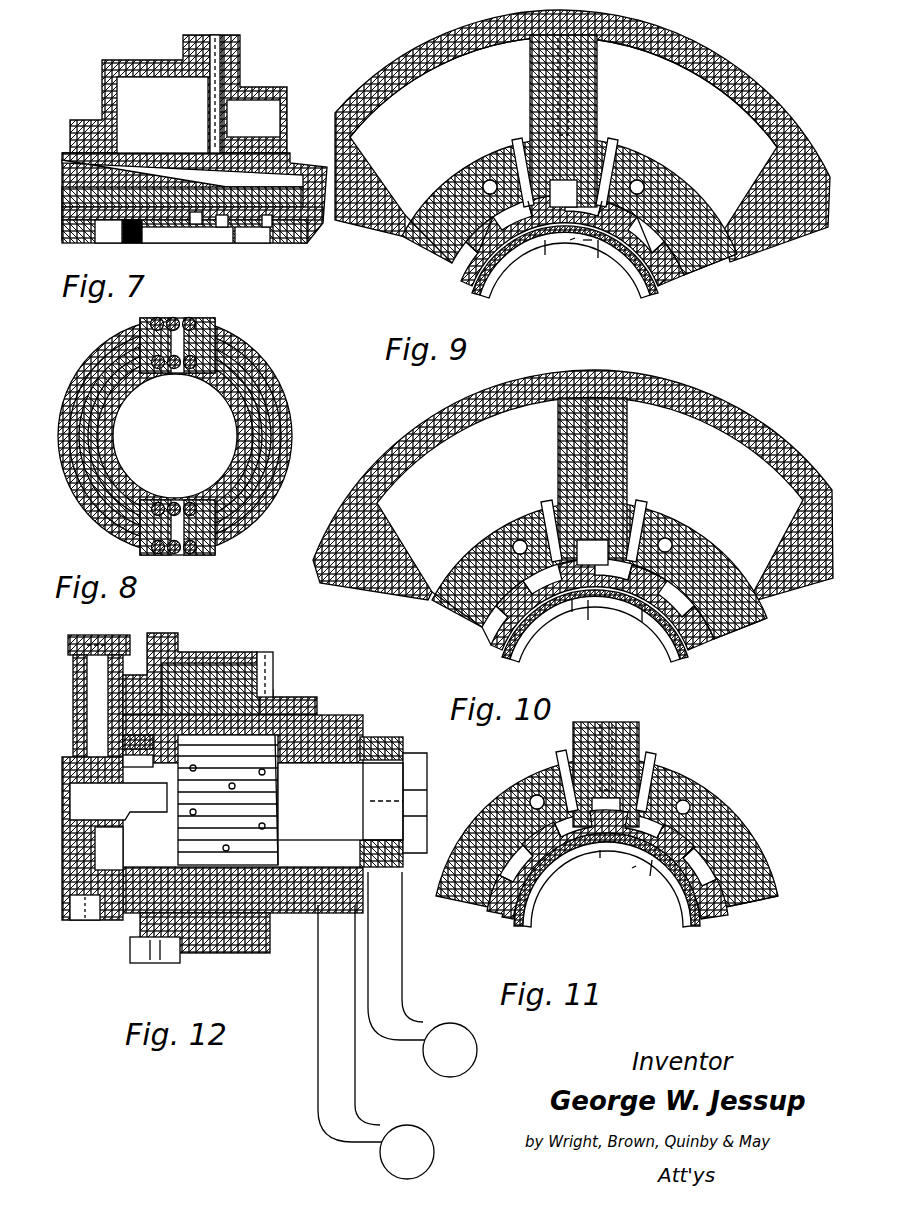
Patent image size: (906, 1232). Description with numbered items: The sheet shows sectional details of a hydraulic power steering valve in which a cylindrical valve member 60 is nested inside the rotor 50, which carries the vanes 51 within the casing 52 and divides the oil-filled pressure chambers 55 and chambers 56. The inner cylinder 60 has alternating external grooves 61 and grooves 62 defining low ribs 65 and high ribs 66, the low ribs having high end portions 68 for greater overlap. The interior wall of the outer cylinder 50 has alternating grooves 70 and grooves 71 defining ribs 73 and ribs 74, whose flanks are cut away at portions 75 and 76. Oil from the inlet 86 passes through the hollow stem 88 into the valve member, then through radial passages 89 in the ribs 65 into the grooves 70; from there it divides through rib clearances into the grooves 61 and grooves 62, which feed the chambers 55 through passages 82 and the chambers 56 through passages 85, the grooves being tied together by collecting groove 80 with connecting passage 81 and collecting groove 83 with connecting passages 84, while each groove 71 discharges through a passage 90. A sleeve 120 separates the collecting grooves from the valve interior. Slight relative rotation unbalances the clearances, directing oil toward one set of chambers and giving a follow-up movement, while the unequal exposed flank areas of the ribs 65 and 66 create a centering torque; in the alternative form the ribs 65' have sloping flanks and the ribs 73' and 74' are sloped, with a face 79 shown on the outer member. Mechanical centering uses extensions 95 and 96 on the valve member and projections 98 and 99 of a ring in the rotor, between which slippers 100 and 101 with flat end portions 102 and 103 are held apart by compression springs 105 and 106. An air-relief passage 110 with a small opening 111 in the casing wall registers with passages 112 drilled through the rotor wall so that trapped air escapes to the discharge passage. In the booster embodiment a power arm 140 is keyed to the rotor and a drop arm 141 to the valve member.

In FIG. 7, the rotor 50 is at (322, 172).
In FIG. 9, the rotor 50 is at (720, 276).
In FIG. 10, the rotor 50 is at (740, 630).
In FIG. 11, the rotor 50 is at (750, 880).
In FIG. 12, the rotor 50 is at (350, 735).
In FIG. 9, the vane 51 is at (598, 70).
In FIG. 10, the vane 51 is at (558, 426).
In FIG. 11, the vane 51 is at (575, 740).
In FIG. 12, the vane 51 is at (222, 672).
In FIG. 7, the casing 52 is at (104, 60).
In FIG. 12, the casing 52 is at (205, 652).
In FIG. 9, the pressure chamber 55 is at (715, 95).
In FIG. 7, the pressure chamber 56 is at (162, 115).
In FIG. 9, the pressure chamber 56 is at (400, 80).
In FIG. 10, the pressure chamber 56 is at (420, 430).
In FIG. 9, the valve member 60 is at (660, 285).
In FIG. 10, the valve member 60 is at (688, 652).
In FIG. 11, the valve member 60 is at (715, 905).
In FIG. 12, the valve member 60 is at (300, 770).
In FIG. 9, the longitudinal groove 61 is at (612, 175).
In FIG. 10, the longitudinal groove 61 is at (478, 618).
In FIG. 9, the longitudinal groove 62 is at (510, 170).
In FIG. 10, the longitudinal groove 62 is at (556, 610).
In FIG. 9, the rib 65 is at (558, 220).
In FIG. 10, the rib 65 is at (583, 589).
In FIG. 12, the rib 65 is at (286, 802).
In FIG. 11, the rib 65' is at (624, 814).
In FIG. 9, the rib 66 is at (690, 220).
In FIG. 10, the rib 66 is at (635, 625).
In FIG. 11, the rib 66 is at (540, 835).
In FIG. 12, the rib 66 is at (185, 815).
In FIG. 12, the high end portion 68 is at (285, 738).
In FIG. 9, the longitudinal groove 70 is at (528, 120).
In FIG. 10, the longitudinal groove 70 is at (728, 676).
In FIG. 11, the longitudinal groove 70 is at (588, 760).
In FIG. 9, the longitudinal groove 71 is at (480, 215).
In FIG. 10, the longitudinal groove 71 is at (505, 560).
In FIG. 9, the rib 73 is at (414, 204).
In FIG. 10, the rib 73 is at (466, 586).
In FIG. 11, the rib 73' is at (583, 805).
In FIG. 9, the rib 74 is at (720, 270).
In FIG. 10, the rib 74 is at (728, 578).
In FIG. 11, the rib 74' is at (639, 812).
In FIG. 10, the cut-away flank portion 75 is at (520, 580).
In FIG. 10, the cut-away flank portion 76 is at (690, 545).
In FIG. 11, the face 79 is at (750, 865).
In FIG. 7, the collecting groove 80 is at (222, 228).
In FIG. 9, the connecting passage 81 is at (588, 250).
In FIG. 12, the connecting passage 81 is at (230, 848).
In FIG. 9, the passage 82 is at (608, 138).
In FIG. 10, the passage 82 is at (636, 500).
In FIG. 11, the passage 82 is at (650, 758).
In FIG. 7, the collecting groove 83 is at (172, 226).
In FIG. 9, the collecting groove 83 is at (498, 290).
In FIG. 10, the collecting groove 83 is at (572, 620).
In FIG. 11, the collecting groove 83 is at (575, 875).
In FIG. 7, the connecting passage 84 is at (198, 237).
In FIG. 9, the connecting passage 84 is at (545, 255).
In FIG. 10, the connecting passage 84 is at (588, 630).
In FIG. 11, the connecting passage 84 is at (600, 862).
In FIG. 12, the connecting passage 84 is at (196, 768).
In FIG. 9, the connecting passage 85 is at (522, 140).
In FIG. 10, the connecting passage 85 is at (545, 505).
In FIG. 11, the connecting passage 85 is at (560, 752).
In FIG. 12, the fluid inlet 86 is at (98, 697).
In FIG. 12, the hollow stem 88 is at (118, 801).
In FIG. 7, the radial passage 89 is at (270, 232).
In FIG. 9, the radial passage 89 is at (565, 250).
In FIG. 10, the radial passage 89 is at (495, 645).
In FIG. 11, the radial passage 89 is at (632, 870).
In FIG. 12, the radial passage 89 is at (272, 812).
In FIG. 7, the discharge passage 90 is at (65, 160).
In FIG. 9, the discharge passage 90 is at (483, 185).
In FIG. 10, the discharge passage 90 is at (664, 538).
In FIG. 11, the discharge passage 90 is at (530, 802).
In FIG. 8, the extension 95 is at (112, 373).
In FIG. 12, the extension 95 is at (100, 758).
In FIG. 8, the extension 96 is at (258, 386).
In FIG. 8, the projection 98 is at (105, 346).
In FIG. 12, the projection 98 is at (120, 745).
In FIG. 8, the projection 99 is at (250, 355).
In FIG. 8, the slipper 100 is at (118, 476).
In FIG. 8, the slipper 101 is at (236, 426).
In FIG. 8, the flat end portion 102 is at (160, 318).
In FIG. 8, the flat end portion 103 is at (208, 318).
In FIG. 8, the compression spring 105 is at (185, 318).
In FIG. 8, the compression spring 106 is at (180, 556).
In FIG. 7, the passage 110 is at (220, 92).
In FIG. 9, the passage 110 is at (556, 52).
In FIG. 10, the passage 110 is at (600, 422).
In FIG. 11, the passage 110 is at (642, 736).
In FIG. 12, the passage 110 is at (272, 680).
In FIG. 7, the opening 111 is at (210, 80).
In FIG. 7, the passage 112 is at (215, 153).
In FIG. 9, the passage 112 is at (478, 176).
In FIG. 10, the passage 112 is at (518, 538).
In FIG. 11, the passage 112 is at (530, 796).
In FIG. 7, the sleeve 120 is at (244, 240).
In FIG. 9, the sleeve 120 is at (625, 300).
In FIG. 10, the sleeve 120 is at (530, 655).
In FIG. 11, the sleeve 120 is at (545, 918).
In FIG. 12, the power arm 140 is at (325, 1030).
In FIG. 12, the drop arm 141 is at (388, 925).